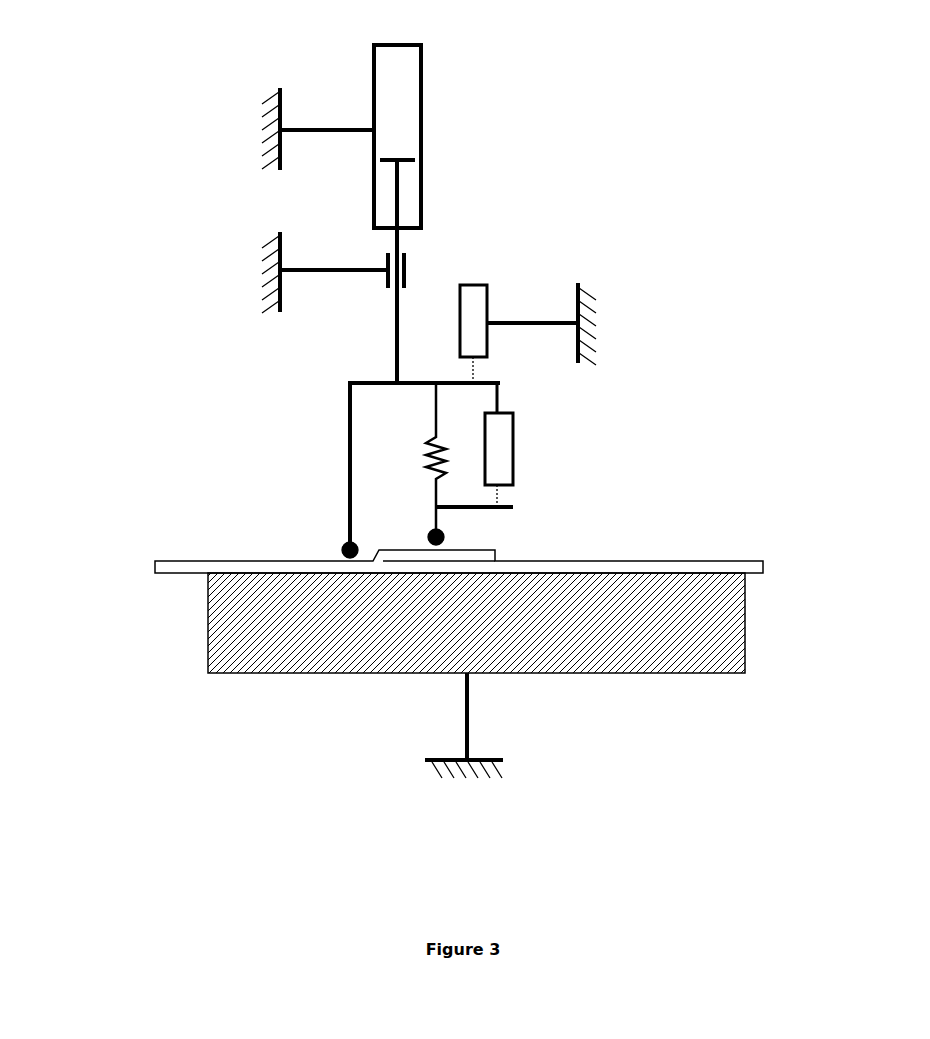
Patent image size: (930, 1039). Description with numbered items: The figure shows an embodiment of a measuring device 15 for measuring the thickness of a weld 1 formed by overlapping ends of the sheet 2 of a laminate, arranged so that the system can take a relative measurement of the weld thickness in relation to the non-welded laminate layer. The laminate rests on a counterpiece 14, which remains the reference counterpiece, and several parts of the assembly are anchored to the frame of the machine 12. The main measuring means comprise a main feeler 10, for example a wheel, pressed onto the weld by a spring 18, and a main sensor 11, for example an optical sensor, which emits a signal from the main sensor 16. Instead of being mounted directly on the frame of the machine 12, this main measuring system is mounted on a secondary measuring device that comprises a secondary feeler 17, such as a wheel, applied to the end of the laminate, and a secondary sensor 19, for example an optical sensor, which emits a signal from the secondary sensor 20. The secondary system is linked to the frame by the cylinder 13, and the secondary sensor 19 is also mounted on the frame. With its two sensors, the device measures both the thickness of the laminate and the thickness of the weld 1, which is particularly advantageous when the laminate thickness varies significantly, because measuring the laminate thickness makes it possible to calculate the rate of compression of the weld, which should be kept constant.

The weld 1 is at (378, 520).
The ends of the sheet 2 is at (200, 568).
The main feeler 10 is at (450, 538).
The main sensor 11 is at (500, 465).
The frame of the machine 12 is at (265, 140).
The cylinder 13 is at (425, 135).
The counterpiece 14 is at (212, 602).
The measuring device 15 is at (160, 147).
The signal from the main sensor 16 is at (500, 497).
The secondary feeler 17 is at (345, 548).
The spring 18 is at (430, 455).
The secondary sensor 19 is at (490, 297).
The signal from the secondary sensor 20 is at (473, 368).